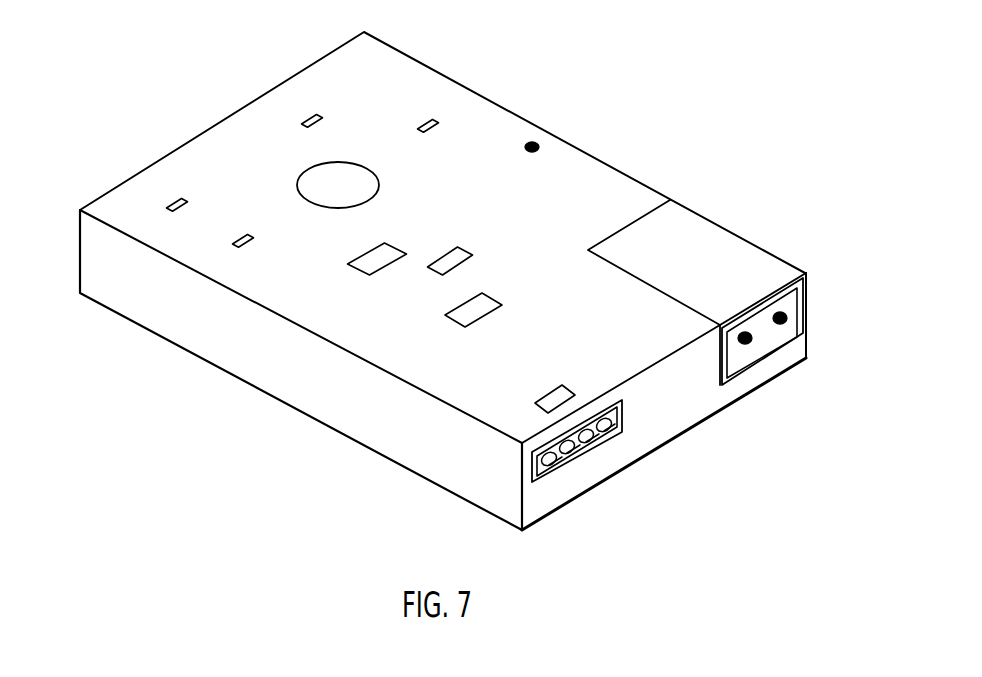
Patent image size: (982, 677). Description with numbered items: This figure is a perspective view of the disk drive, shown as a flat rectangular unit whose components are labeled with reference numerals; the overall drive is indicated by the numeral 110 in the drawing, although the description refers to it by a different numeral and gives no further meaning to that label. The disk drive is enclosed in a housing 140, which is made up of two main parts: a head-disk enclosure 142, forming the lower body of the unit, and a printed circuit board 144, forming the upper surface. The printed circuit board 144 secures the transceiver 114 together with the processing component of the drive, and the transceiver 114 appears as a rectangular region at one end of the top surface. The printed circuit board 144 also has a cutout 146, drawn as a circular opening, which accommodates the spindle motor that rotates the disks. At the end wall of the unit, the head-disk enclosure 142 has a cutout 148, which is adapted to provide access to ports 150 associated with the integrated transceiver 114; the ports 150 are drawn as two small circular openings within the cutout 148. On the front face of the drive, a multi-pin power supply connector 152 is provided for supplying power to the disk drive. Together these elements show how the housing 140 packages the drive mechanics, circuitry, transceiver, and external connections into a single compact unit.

The security device / electronic module 110 is at (90, 166).
The transceiver 114 is at (710, 242).
The housing 140 is at (119, 342).
The head-disk enclosure 142 is at (300, 378).
The printed circuit board 144 is at (535, 144).
The cutout 146 is at (340, 183).
The cutout 148 is at (763, 367).
The ports 150 is at (786, 318).
The power supply connector 152 is at (583, 457).